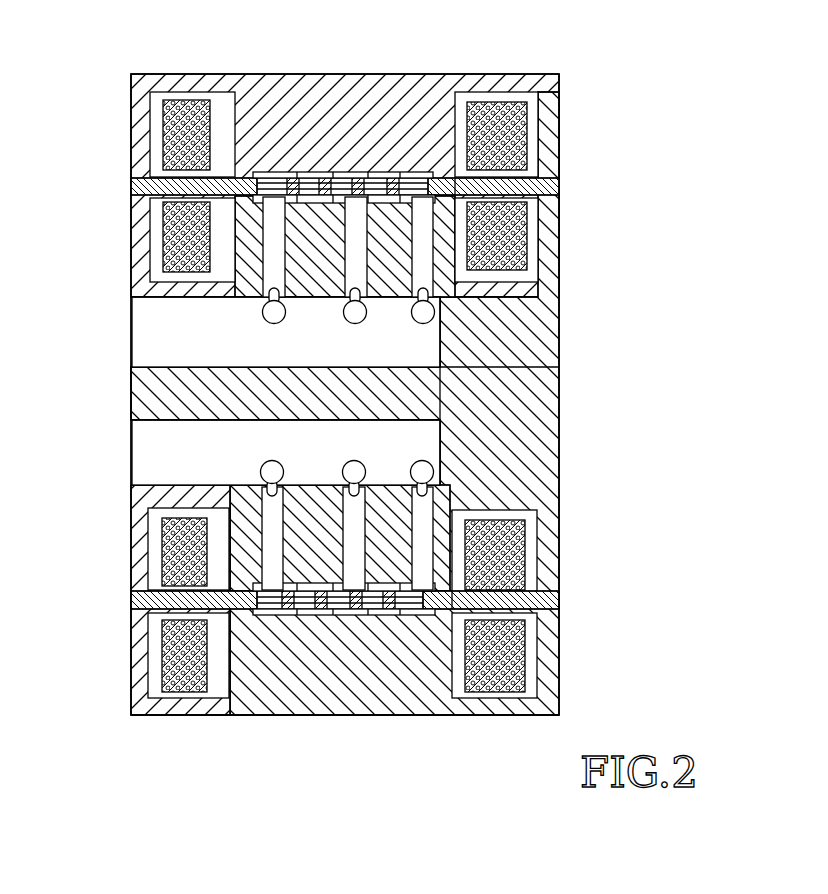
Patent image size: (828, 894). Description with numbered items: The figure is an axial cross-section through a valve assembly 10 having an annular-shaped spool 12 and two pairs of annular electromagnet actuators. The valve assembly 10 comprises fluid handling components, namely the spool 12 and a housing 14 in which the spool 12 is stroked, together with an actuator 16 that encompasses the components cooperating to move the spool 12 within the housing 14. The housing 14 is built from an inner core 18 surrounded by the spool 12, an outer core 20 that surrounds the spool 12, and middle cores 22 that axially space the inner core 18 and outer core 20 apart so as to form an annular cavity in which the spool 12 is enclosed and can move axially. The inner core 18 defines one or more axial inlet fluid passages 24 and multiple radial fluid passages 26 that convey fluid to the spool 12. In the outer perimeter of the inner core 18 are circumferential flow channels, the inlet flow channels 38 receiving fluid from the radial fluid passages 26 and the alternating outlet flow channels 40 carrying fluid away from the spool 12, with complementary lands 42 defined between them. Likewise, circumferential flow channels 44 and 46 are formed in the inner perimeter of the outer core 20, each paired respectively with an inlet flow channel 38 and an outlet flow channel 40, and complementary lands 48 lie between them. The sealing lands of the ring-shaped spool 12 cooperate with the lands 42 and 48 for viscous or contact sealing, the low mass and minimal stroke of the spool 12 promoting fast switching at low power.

The valve assembly 10 is at (155, 60).
The spool 12 is at (407, 172).
The housing 14 is at (250, 715).
The actuator 16 is at (166, 125).
The inner core 18 is at (517, 412).
The outer core 20 is at (560, 83).
The middle cores 22 is at (140, 190).
The axial inlet fluid passages 24 is at (133, 438).
The radial fluid passages 26 is at (348, 276).
The inlet flow channels 38 is at (273, 198).
The outlet flow channels 40 is at (324, 198).
The complementary lands 42 is at (339, 198).
The circumferential flow channels 44 is at (266, 172).
The circumferential flow channels 46 is at (310, 172).
The complementary lands 48 is at (336, 172).